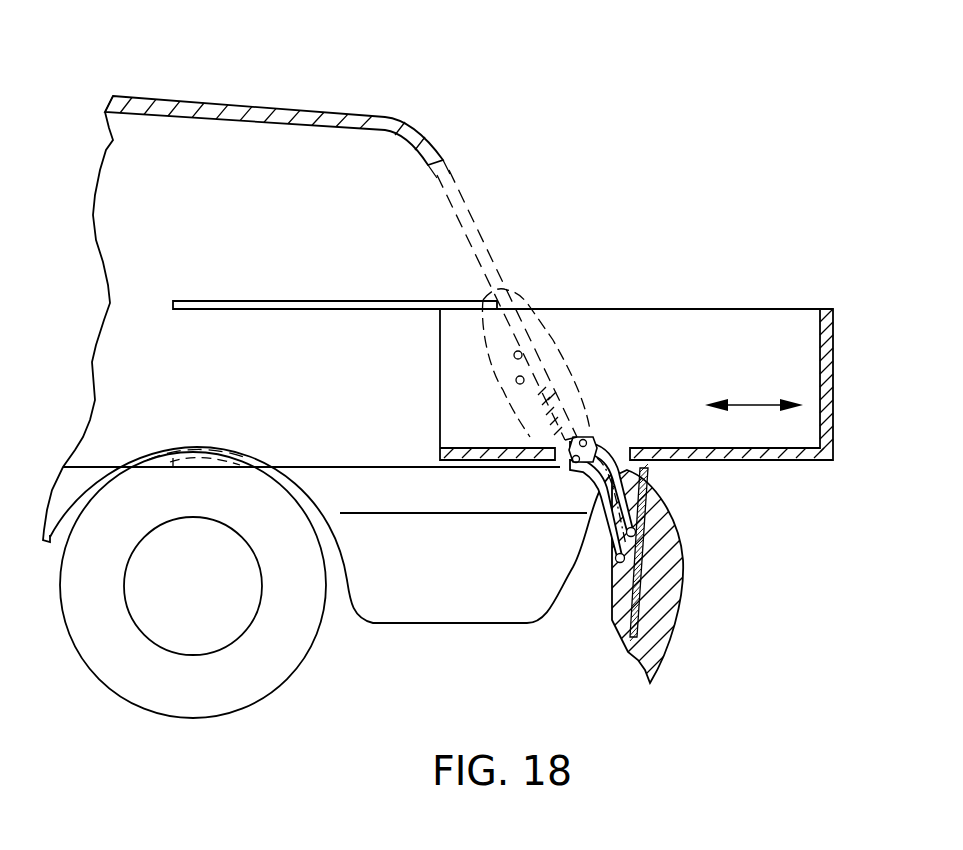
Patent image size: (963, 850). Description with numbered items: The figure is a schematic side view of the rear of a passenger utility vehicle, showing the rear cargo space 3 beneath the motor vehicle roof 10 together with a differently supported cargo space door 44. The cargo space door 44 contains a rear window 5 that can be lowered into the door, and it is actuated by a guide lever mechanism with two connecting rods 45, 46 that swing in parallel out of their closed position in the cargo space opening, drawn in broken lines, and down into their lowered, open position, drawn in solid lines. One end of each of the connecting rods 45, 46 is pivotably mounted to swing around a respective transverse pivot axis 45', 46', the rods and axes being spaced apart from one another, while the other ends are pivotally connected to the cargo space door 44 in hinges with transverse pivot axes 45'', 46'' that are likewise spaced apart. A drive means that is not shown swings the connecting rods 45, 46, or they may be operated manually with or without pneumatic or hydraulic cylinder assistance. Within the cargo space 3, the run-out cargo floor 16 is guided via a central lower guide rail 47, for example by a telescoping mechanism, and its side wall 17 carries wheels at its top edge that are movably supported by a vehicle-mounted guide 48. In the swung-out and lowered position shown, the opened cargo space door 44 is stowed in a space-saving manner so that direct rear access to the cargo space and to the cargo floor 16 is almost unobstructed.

The rear cargo space 3 is at (278, 402).
The rear window 5 is at (467, 203).
The motor vehicle roof 10 is at (171, 92).
The cargo floor 16 is at (777, 457).
The side wall 17 is at (720, 340).
The cargo space door 44 is at (684, 628).
The connecting rod 45 is at (567, 352).
The transverse pivot axis 45' is at (602, 341).
The transverse pivot axis of hinge 45'' is at (695, 512).
The connecting rod 46 is at (531, 530).
The transverse pivot axis 46' is at (525, 578).
The transverse pivot axis of hinge 46'' is at (589, 571).
The central lower guide rail 47 is at (390, 466).
The vehicle-mounted guide 48 is at (268, 301).